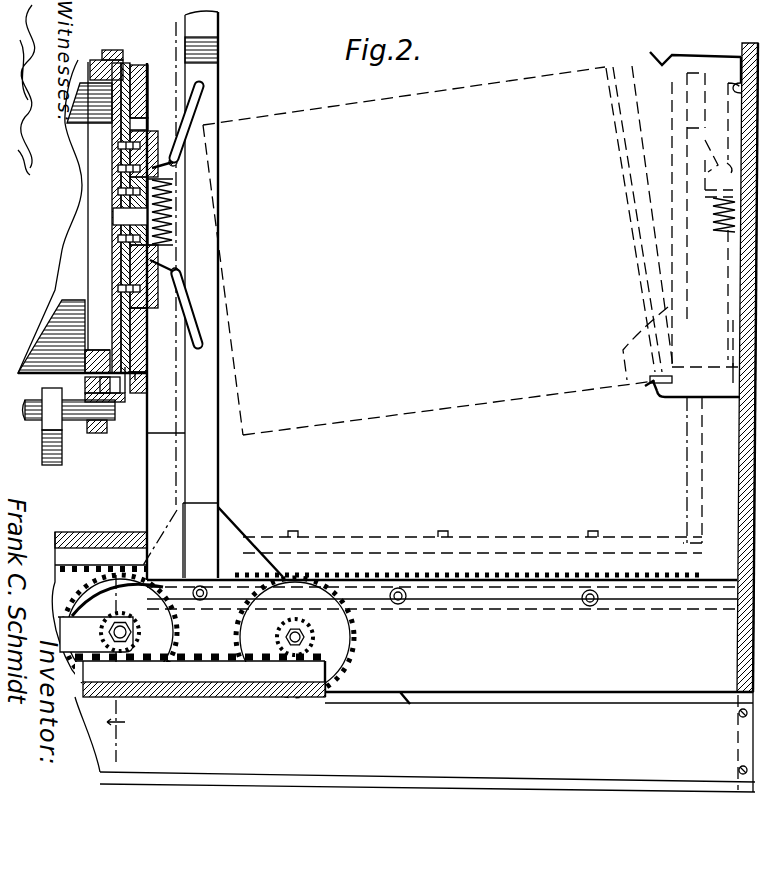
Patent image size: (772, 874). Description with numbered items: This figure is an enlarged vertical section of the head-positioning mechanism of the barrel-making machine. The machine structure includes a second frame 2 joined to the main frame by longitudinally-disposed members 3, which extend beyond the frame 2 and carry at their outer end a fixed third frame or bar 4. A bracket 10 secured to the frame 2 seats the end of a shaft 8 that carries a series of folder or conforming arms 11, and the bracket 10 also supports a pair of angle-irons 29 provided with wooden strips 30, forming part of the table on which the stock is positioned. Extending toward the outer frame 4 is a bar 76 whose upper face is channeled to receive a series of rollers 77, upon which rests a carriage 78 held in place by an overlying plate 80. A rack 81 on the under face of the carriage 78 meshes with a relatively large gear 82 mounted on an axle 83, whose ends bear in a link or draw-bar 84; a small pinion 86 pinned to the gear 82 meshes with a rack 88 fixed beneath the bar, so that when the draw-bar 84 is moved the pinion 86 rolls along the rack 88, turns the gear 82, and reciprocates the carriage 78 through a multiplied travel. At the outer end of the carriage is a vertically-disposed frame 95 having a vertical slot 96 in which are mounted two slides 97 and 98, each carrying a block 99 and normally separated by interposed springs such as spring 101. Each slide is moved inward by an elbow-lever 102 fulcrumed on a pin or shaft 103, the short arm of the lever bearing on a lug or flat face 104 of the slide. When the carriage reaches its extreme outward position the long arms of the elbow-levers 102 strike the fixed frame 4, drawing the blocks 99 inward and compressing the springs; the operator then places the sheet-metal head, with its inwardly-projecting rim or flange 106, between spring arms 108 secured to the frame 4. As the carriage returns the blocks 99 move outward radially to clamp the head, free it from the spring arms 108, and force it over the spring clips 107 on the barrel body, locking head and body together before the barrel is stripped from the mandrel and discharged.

The second frame 2 is at (222, 38).
The longitudinally-disposed members 3 is at (279, 384).
The third frame or bar 4 is at (742, 462).
The shaft 8 is at (33, 421).
The bracket 10 is at (165, 428).
The folder or conforming arms 11 is at (56, 466).
The angle-irons 29 is at (125, 410).
The wooden strips 30 is at (126, 398).
The bar 76 is at (442, 615).
The rollers 77 is at (404, 605).
The carriage 78 is at (82, 538).
The plate 80 is at (328, 570).
The rack 81 is at (77, 562).
The large gear 82 is at (168, 664).
The axle 83 is at (123, 624).
The link or draw-bar 84 is at (105, 636).
The small pinion 86 is at (177, 633).
The rack 88 is at (268, 699).
The vertically-disposed frame 95 is at (143, 68).
The vertically-disposed slot 96 is at (110, 300).
The slide 97 is at (205, 127).
The slide 98 is at (152, 306).
The block 99 is at (120, 118).
The spring 101 is at (165, 212).
The elbow-lever 102 is at (202, 87).
The pin or shaft 103 is at (178, 162).
The lug or flat face 104 is at (160, 141).
The inwardly-projecting rim or flange 106 is at (112, 51).
The spring clips 107 is at (129, 384).
The spring arms 108 is at (684, 58).